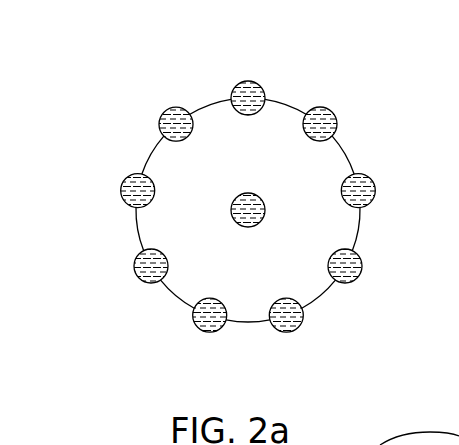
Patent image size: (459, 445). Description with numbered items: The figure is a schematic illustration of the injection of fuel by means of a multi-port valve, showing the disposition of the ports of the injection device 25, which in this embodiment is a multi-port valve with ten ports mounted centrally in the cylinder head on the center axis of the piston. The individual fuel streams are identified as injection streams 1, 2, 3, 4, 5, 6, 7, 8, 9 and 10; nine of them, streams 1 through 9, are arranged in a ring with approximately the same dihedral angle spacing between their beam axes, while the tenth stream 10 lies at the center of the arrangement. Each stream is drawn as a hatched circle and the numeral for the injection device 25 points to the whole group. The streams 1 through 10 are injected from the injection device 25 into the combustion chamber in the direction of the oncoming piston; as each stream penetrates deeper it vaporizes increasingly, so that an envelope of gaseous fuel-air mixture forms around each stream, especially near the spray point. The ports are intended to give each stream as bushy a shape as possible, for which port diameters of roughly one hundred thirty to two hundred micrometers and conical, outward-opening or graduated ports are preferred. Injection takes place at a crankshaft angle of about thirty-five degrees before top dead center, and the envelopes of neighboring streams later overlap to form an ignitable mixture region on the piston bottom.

The injection stream 1 is at (246, 81).
The injection stream 2 is at (334, 112).
The injection stream 3 is at (375, 189).
The injection stream 4 is at (357, 278).
The injection stream 5 is at (291, 332).
The injection stream 6 is at (205, 332).
The injection stream 7 is at (135, 275).
The injection stream 8 is at (121, 184).
The injection stream 9 is at (162, 110).
The injection stream 10 is at (251, 194).
The injection device 25 is at (113, 128).